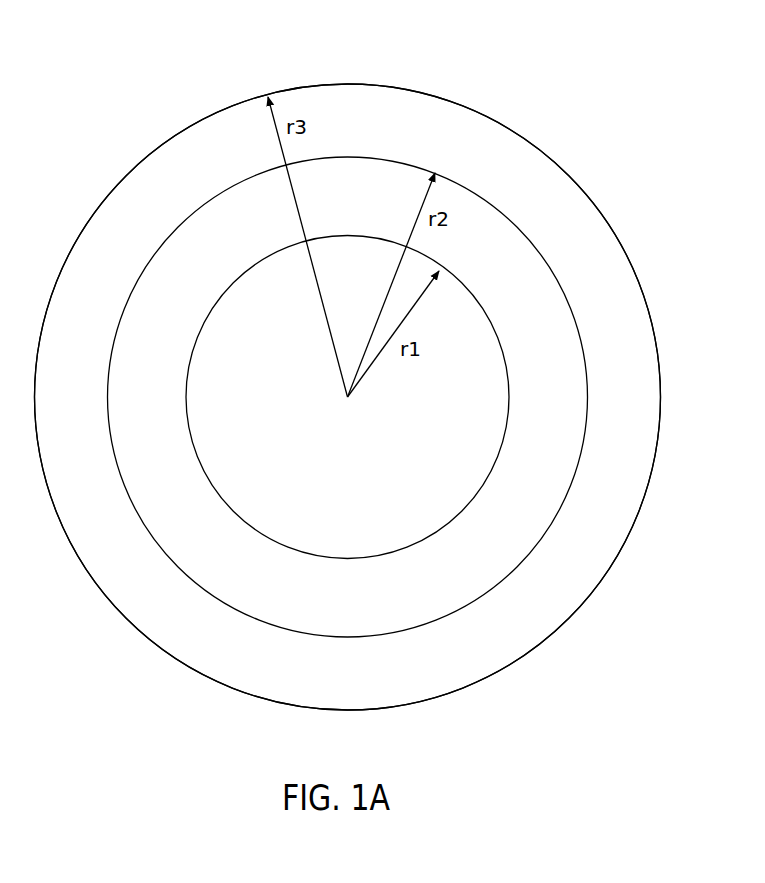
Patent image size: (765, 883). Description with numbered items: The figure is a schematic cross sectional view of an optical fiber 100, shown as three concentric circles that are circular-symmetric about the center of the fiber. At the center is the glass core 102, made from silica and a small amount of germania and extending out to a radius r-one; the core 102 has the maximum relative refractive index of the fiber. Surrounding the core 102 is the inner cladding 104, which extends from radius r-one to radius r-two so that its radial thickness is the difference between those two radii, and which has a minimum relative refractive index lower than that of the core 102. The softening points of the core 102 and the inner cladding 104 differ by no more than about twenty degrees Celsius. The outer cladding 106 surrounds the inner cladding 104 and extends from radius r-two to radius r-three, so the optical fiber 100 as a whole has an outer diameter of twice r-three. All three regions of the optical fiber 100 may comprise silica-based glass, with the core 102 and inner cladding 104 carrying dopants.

The optical fiber 100 is at (504, 80).
The core 102 is at (470, 477).
The inner cladding 104 is at (560, 463).
The outer cladding 106 is at (643, 338).